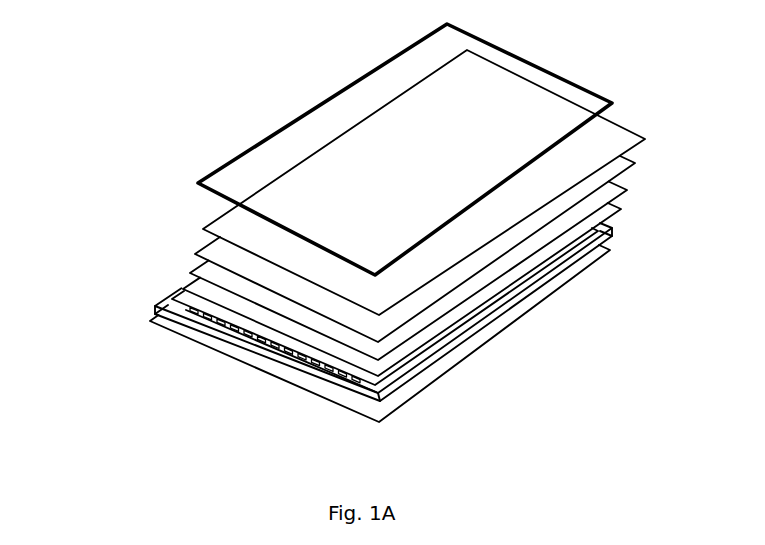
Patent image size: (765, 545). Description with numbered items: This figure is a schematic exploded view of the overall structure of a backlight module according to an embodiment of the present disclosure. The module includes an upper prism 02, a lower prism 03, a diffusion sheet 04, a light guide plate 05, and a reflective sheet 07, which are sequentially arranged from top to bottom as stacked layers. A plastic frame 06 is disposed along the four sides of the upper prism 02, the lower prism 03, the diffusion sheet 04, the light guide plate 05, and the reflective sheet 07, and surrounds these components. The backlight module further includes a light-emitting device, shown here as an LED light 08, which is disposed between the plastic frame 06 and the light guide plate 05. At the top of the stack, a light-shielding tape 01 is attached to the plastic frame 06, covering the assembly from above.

The light-shielding tape 01 is at (327, 99).
The upper prism 02 is at (273, 176).
The lower prism 03 is at (203, 243).
The diffusion sheet 04 is at (535, 256).
The light guide plate 05 is at (493, 298).
The plastic frame 06 is at (160, 304).
The reflective sheet 07 is at (443, 372).
The LED light 08 is at (383, 397).